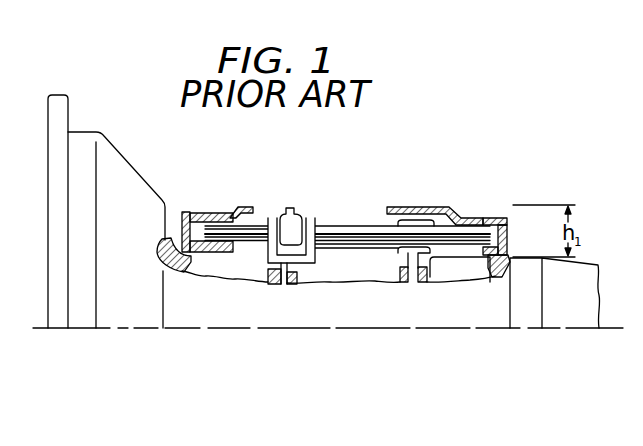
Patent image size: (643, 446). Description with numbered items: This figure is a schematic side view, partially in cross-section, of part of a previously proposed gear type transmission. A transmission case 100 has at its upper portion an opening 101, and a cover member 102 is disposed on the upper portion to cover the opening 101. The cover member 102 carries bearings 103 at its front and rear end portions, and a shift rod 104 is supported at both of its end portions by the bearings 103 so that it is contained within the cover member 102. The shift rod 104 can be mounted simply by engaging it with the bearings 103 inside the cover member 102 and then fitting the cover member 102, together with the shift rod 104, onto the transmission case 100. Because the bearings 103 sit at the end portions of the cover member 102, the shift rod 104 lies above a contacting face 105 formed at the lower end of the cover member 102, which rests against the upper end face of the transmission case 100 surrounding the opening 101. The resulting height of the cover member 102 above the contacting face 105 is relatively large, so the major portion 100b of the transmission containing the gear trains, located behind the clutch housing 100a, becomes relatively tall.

The transmission case 100 is at (193, 325).
The clutch housing 100a is at (145, 188).
The major portion of the transmission 100b is at (241, 195).
The opening 101 is at (354, 262).
The cover member 102 is at (421, 206).
The bearings 103 is at (200, 212).
The shift rod 104 is at (328, 227).
The contacting face 105 is at (508, 262).